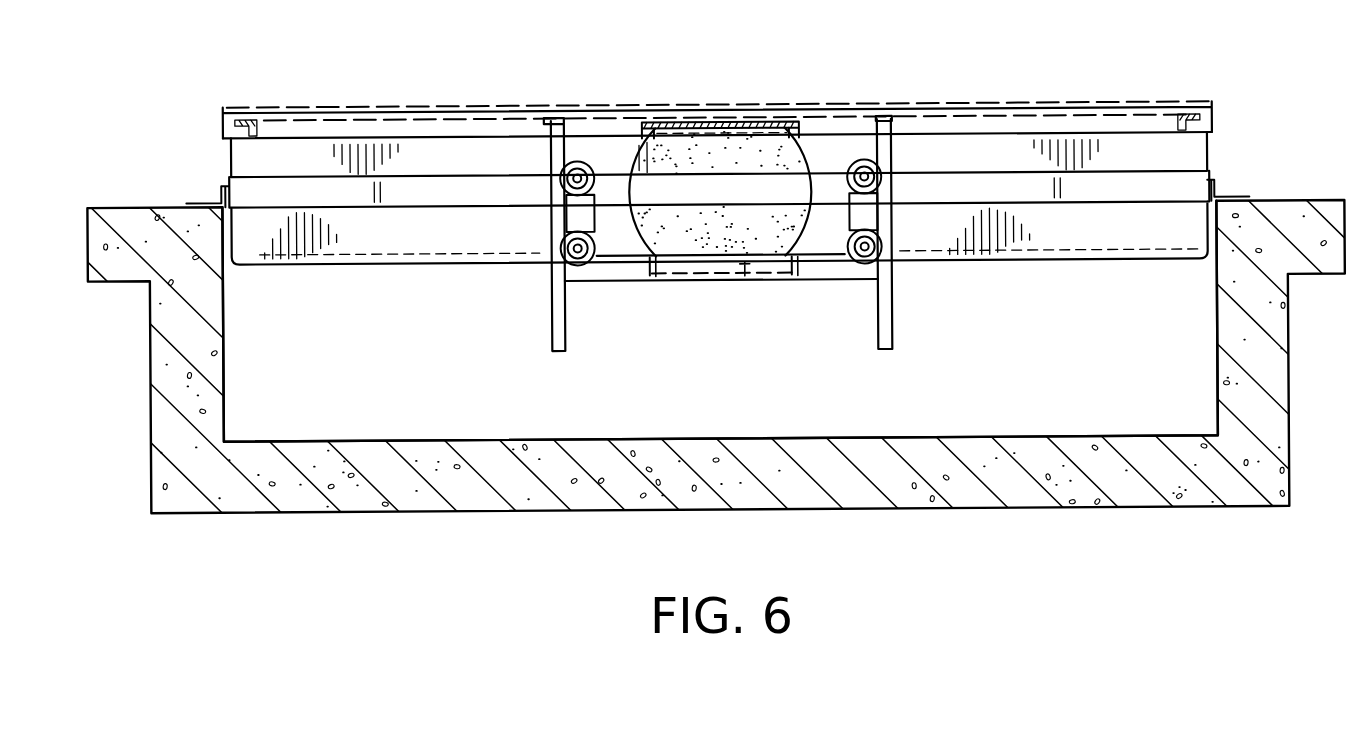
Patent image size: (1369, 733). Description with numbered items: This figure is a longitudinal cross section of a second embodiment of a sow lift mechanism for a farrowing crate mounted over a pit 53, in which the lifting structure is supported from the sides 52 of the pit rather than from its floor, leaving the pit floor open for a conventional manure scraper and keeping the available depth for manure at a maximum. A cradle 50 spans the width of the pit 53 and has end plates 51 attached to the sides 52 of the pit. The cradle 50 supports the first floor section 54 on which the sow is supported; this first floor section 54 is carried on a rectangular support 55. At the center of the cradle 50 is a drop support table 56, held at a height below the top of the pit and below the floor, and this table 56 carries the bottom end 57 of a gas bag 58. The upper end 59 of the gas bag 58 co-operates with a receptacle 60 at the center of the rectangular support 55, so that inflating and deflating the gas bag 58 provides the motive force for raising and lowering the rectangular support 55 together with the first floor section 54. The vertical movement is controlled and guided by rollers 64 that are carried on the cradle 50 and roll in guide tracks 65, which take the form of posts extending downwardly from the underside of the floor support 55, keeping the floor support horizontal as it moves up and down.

The cradle 50 is at (467, 200).
The end plates 51 is at (220, 197).
The sides of the pit 52 is at (223, 353).
The pit 53 is at (997, 405).
The first floor section 54 is at (445, 102).
The rectangular support 55 is at (497, 126).
The drop support table 56 is at (628, 270).
The bottom end of gas bag 57 is at (745, 265).
The gas bag 58 is at (713, 150).
The upper end of gas bag 59 is at (673, 126).
The receptacle 60 is at (753, 121).
The rollers 64 is at (602, 263).
The guide tracks 65 is at (572, 328).